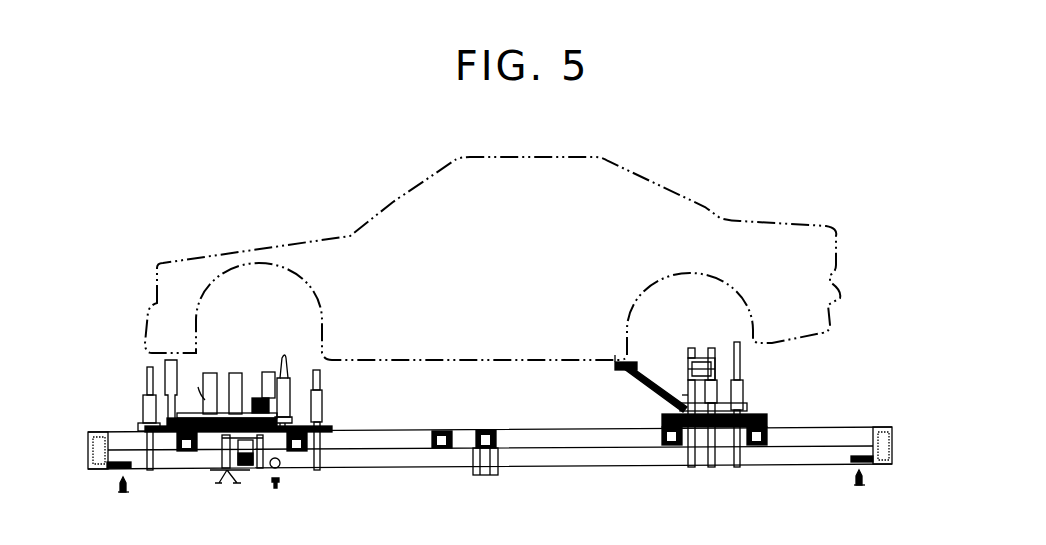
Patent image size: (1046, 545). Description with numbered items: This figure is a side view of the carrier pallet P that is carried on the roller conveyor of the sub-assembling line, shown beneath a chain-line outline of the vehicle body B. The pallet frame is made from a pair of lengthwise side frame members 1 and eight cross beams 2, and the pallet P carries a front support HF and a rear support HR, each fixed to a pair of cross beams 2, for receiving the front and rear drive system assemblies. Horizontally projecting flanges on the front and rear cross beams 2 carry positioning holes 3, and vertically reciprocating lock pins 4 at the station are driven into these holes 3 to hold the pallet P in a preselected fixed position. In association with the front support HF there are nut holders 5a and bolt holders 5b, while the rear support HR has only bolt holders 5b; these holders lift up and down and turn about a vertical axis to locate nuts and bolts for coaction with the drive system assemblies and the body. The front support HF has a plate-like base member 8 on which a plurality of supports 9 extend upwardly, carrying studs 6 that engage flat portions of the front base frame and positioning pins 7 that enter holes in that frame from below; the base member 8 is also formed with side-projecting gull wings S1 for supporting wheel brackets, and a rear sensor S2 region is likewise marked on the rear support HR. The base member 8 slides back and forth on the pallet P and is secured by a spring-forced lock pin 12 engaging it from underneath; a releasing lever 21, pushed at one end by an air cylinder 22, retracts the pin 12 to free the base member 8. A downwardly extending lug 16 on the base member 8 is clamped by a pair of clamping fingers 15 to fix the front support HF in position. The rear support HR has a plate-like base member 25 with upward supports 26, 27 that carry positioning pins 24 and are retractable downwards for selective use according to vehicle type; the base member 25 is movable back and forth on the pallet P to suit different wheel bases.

The side frame member 1 is at (407, 468).
The cross beam 2 is at (88, 456).
The positioning hole 3 is at (123, 452).
The lock pin 4 is at (120, 487).
The nut holder 5a is at (143, 383).
The bolt holder 5b is at (320, 377).
The stud 6 is at (164, 363).
The positioning pin 7 is at (172, 359).
The base member 8 is at (256, 397).
The support 9 is at (198, 387).
The lock pin 12 is at (250, 473).
The clamping finger 15 is at (213, 473).
The lug 16 is at (227, 476).
The releasing lever 21 is at (281, 466).
The air cylinder 22 is at (277, 488).
The positioning pin 24 is at (698, 357).
The base member 25 is at (740, 403).
The support 26 is at (623, 365).
The support 27 is at (657, 390).
The vehicle body B is at (391, 202).
The front support HF is at (268, 353).
The rear support HR is at (758, 402).
The carrier pallet P is at (553, 428).
The gull wing S1 is at (290, 412).
The rear sensor S2 is at (682, 395).